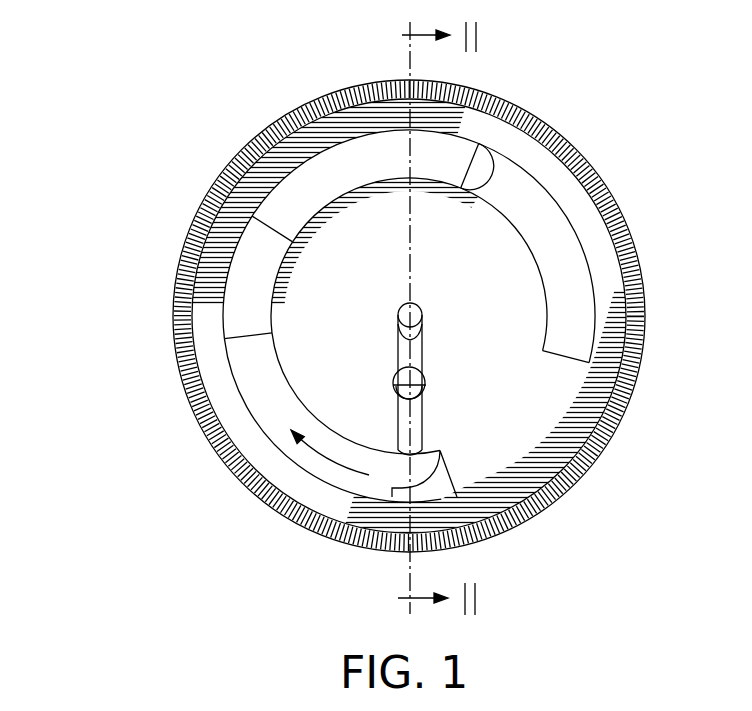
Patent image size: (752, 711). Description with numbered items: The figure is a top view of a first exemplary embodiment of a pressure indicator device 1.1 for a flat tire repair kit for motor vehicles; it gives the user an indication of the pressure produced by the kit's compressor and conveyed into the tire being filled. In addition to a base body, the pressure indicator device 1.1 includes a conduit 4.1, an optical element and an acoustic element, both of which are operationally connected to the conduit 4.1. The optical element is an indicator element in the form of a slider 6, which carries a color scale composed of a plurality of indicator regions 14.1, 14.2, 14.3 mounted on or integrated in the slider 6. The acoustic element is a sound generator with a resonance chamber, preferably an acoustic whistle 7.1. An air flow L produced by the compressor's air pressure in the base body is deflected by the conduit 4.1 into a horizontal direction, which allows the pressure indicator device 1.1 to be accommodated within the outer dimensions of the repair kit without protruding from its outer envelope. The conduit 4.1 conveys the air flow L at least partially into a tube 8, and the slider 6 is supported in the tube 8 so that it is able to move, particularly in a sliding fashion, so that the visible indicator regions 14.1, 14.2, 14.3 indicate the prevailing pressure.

The pressure indicator device 1.1 is at (174, 165).
The indicator region 14.1 is at (457, 157).
The indicator region 14.2 is at (305, 192).
The indicator region 14.3 is at (242, 317).
The tube 8 is at (577, 305).
The slider 6 is at (308, 228).
The conduit 4.1 is at (413, 333).
The acoustic whistle 7.1 is at (421, 378).
The air flow L is at (325, 460).